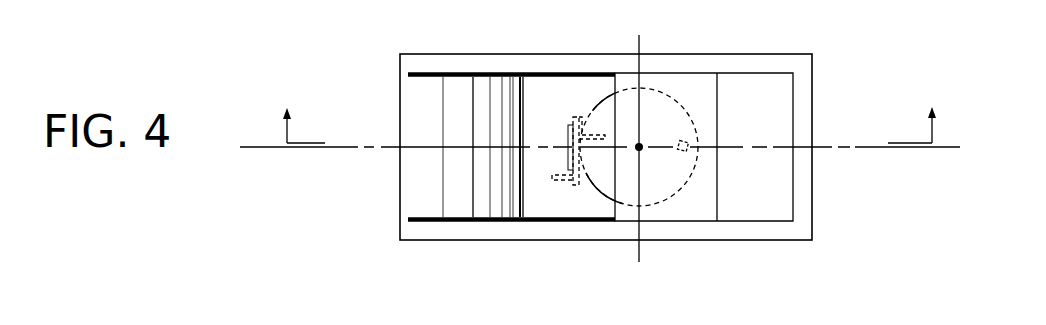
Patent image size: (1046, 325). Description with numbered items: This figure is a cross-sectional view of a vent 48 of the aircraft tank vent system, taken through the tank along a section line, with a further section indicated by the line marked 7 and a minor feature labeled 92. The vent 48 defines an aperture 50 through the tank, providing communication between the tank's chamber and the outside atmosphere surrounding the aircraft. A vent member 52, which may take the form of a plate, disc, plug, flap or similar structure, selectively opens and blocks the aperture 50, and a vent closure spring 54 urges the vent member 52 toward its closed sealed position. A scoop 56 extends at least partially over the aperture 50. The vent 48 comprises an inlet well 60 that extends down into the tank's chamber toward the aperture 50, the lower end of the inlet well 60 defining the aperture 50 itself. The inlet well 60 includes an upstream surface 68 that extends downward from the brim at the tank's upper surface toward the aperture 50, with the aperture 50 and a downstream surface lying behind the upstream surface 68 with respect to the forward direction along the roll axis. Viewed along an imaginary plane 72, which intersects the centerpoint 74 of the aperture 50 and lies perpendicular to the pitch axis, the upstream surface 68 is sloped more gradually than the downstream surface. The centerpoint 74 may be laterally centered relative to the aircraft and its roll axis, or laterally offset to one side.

The section line 7- 7 is at (611, 113).
The vent 48 is at (400, 198).
The aperture 50 is at (668, 198).
The vent member 52 is at (593, 186).
The vent closure spring 54 is at (597, 133).
The scoop 56 is at (612, 205).
The inlet well 60 is at (550, 93).
The upstream surface 68 is at (483, 92).
The imaginary plane 72 is at (268, 148).
The centerpoint 74 is at (641, 146).
The pin 92 is at (684, 139).